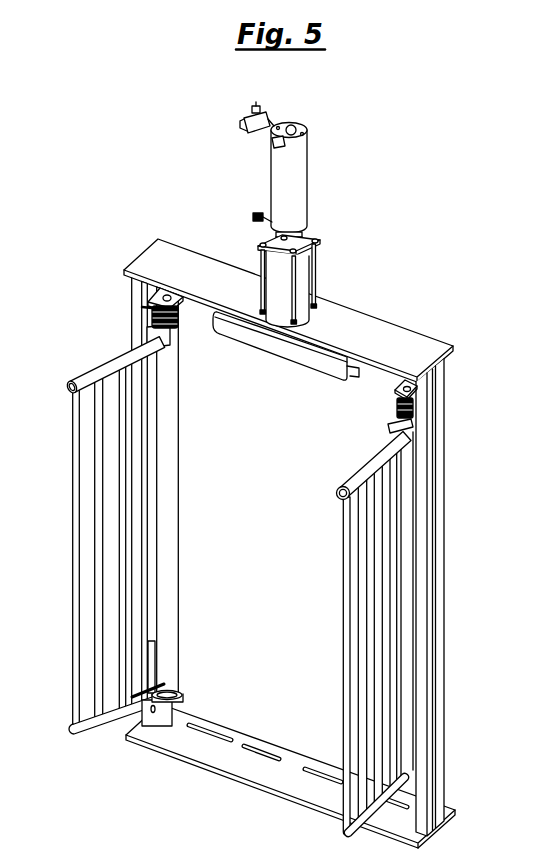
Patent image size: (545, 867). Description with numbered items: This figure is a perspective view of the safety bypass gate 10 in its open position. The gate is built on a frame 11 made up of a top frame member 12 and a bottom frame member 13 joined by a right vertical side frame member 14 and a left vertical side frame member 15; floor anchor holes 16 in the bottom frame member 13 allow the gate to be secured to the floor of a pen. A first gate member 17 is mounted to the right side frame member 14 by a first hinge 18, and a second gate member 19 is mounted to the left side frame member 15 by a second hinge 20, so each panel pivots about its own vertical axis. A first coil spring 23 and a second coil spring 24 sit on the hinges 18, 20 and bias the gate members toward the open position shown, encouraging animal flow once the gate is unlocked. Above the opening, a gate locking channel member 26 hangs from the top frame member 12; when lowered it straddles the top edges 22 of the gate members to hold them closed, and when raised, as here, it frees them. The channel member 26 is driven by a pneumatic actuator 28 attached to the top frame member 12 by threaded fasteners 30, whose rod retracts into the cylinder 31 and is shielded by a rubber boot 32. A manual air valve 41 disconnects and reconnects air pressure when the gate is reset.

The safety bypass gate 10 is at (356, 197).
The frame 11 is at (466, 597).
The top frame member 12 is at (392, 337).
The bottom frame member 13 is at (302, 790).
The right vertical side frame member 14 is at (145, 710).
The left vertical side frame member 15 is at (437, 680).
The floor anchor holes 16 is at (203, 730).
The first gate member 17 is at (120, 390).
The first hinge 18 is at (158, 295).
The second gate member 19 is at (343, 510).
The second hinge 20 is at (412, 389).
The top edges 22 is at (122, 356).
The first coil spring 23 is at (180, 327).
The second coil spring 24 is at (397, 406).
The gate locking channel member 26 is at (303, 358).
The pneumatic actuator 28 is at (279, 184).
The threaded fasteners 30 is at (315, 262).
The cylinder 31 is at (280, 200).
The rubber boot 32 is at (303, 282).
The manual air valve 41 is at (238, 128).